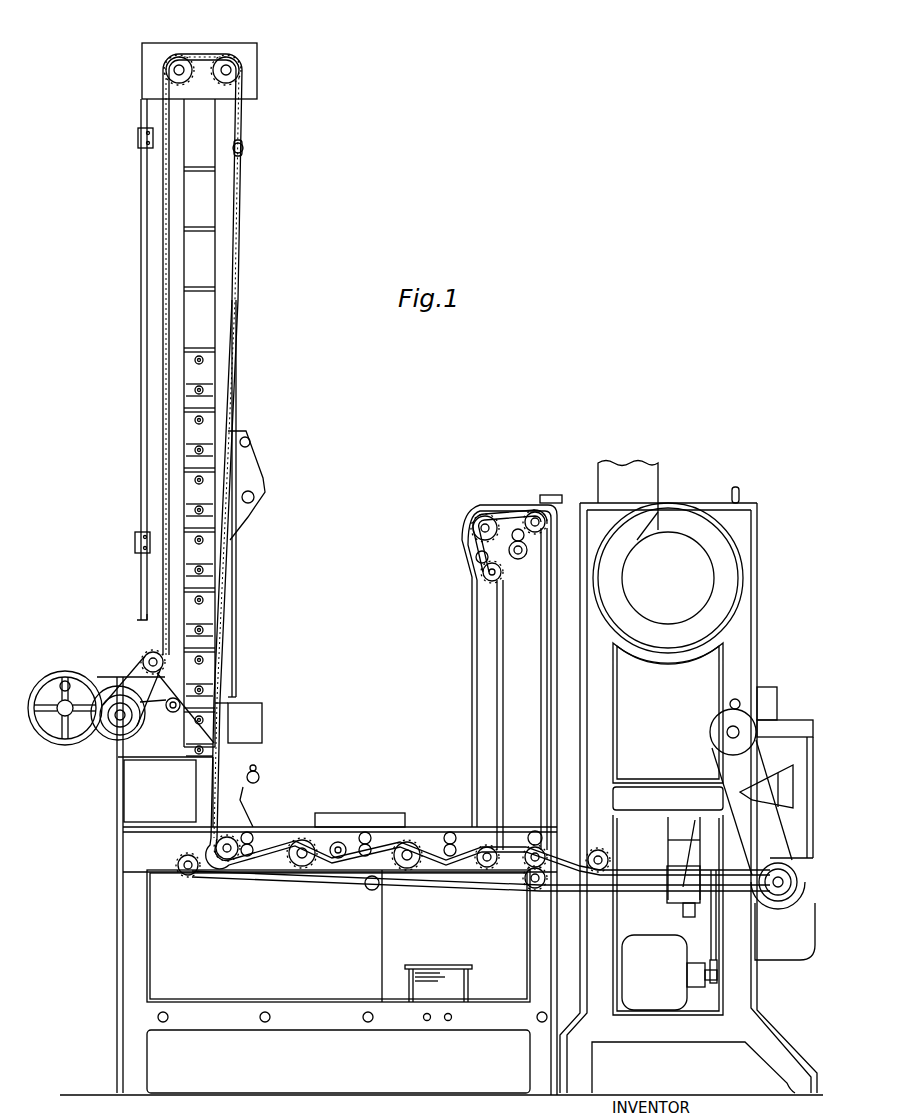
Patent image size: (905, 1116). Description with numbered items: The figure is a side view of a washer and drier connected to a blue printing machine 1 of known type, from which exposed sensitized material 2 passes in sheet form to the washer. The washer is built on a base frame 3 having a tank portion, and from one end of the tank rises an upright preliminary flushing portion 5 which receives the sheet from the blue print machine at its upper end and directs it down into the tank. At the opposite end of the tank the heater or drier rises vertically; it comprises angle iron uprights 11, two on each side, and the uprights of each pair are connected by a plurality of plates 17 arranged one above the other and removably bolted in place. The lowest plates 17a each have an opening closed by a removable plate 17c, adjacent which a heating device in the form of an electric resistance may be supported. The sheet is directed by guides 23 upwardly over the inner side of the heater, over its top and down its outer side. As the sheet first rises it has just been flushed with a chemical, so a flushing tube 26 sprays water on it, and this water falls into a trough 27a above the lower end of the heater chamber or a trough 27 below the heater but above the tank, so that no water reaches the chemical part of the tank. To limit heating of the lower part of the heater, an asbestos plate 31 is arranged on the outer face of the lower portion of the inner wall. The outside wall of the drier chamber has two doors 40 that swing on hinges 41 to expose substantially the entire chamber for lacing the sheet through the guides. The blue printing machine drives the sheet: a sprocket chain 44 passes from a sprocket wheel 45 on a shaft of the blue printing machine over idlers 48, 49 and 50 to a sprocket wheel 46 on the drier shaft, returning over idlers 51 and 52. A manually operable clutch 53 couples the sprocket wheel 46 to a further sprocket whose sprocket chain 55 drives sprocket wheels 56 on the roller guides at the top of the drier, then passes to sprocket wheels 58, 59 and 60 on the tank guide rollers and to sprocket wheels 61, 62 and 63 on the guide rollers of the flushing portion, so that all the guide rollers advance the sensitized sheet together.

The blue printing machine 1 is at (745, 622).
The exposed sensitized material 2 is at (565, 500).
The base frame 3 is at (330, 1027).
The preliminary flushing portion 5 is at (476, 665).
The angle iron uprights 11 is at (180, 196).
The plates 17 is at (207, 123).
The lowest plates 17a is at (210, 396).
The removable plate 17c is at (208, 368).
The guides 23 is at (243, 147).
The flushing tube 26 is at (251, 442).
The trough 27 is at (262, 722).
The trough 27a is at (263, 480).
The asbestos plate 31 is at (234, 618).
The doors 40 is at (141, 292).
The hinges 41 is at (138, 137).
The sprocket chain 44 is at (510, 885).
The sprocket wheel 45 is at (778, 896).
The sprocket wheel 46 is at (107, 746).
The idler 48 is at (600, 850).
The idler 49 is at (535, 846).
The idler 50 is at (232, 861).
The idler 51 is at (192, 877).
The idler 52 is at (536, 890).
The manually operable clutch 53 is at (93, 742).
The sprocket chain 55 is at (162, 430).
The sprocket wheels 56 is at (179, 57).
The sprocket wheel 58 is at (300, 840).
The sprocket wheel 59 is at (408, 842).
The sprocket wheel 60 is at (484, 868).
The sprocket wheel 61 is at (482, 574).
The sprocket wheel 62 is at (486, 515).
The sprocket wheel 63 is at (535, 510).